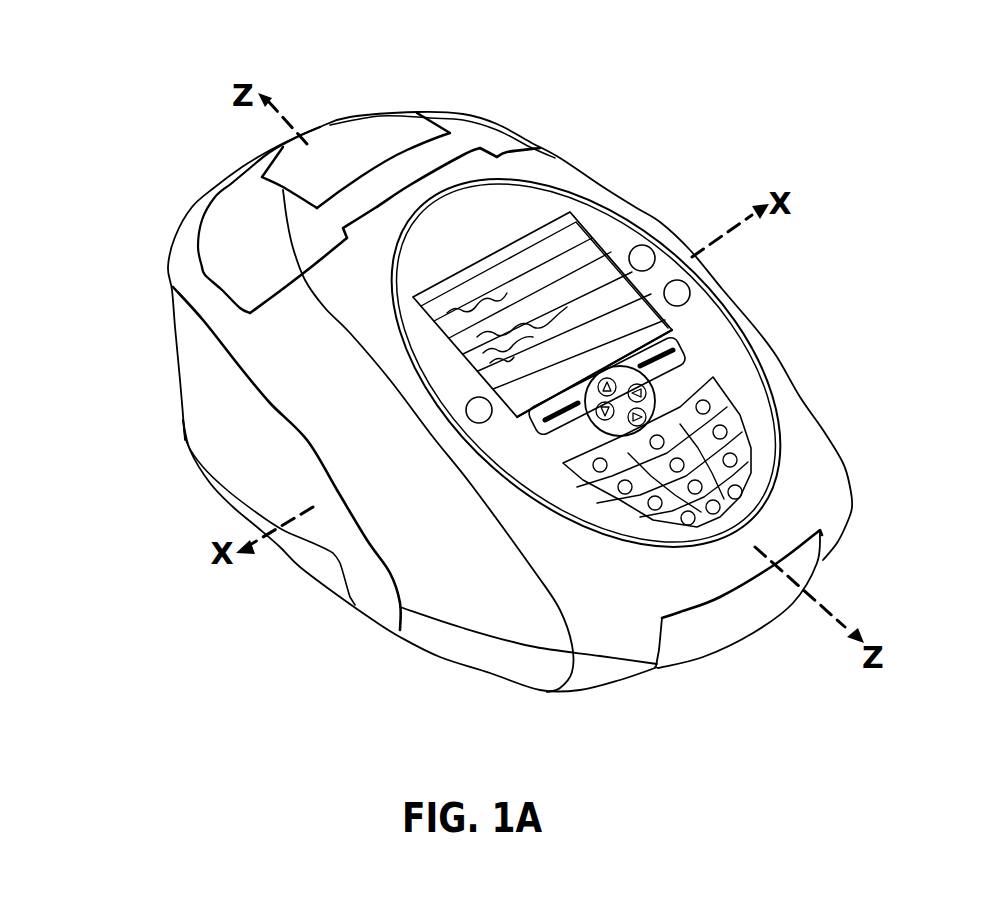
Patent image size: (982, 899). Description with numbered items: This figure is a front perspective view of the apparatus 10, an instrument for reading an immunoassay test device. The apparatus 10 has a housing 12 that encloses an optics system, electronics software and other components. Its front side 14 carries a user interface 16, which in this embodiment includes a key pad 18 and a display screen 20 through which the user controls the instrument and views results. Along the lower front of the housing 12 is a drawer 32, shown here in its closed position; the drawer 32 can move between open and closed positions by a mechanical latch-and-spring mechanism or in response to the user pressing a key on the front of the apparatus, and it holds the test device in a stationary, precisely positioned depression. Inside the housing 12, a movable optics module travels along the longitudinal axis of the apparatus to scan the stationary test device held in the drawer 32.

The apparatus 10 is at (126, 58).
The housing 12 is at (307, 398).
The front side 14 is at (480, 483).
The user interface 16 is at (565, 488).
The key pad 18 is at (717, 378).
The display screen 20 is at (598, 297).
The drawer 32 is at (763, 626).